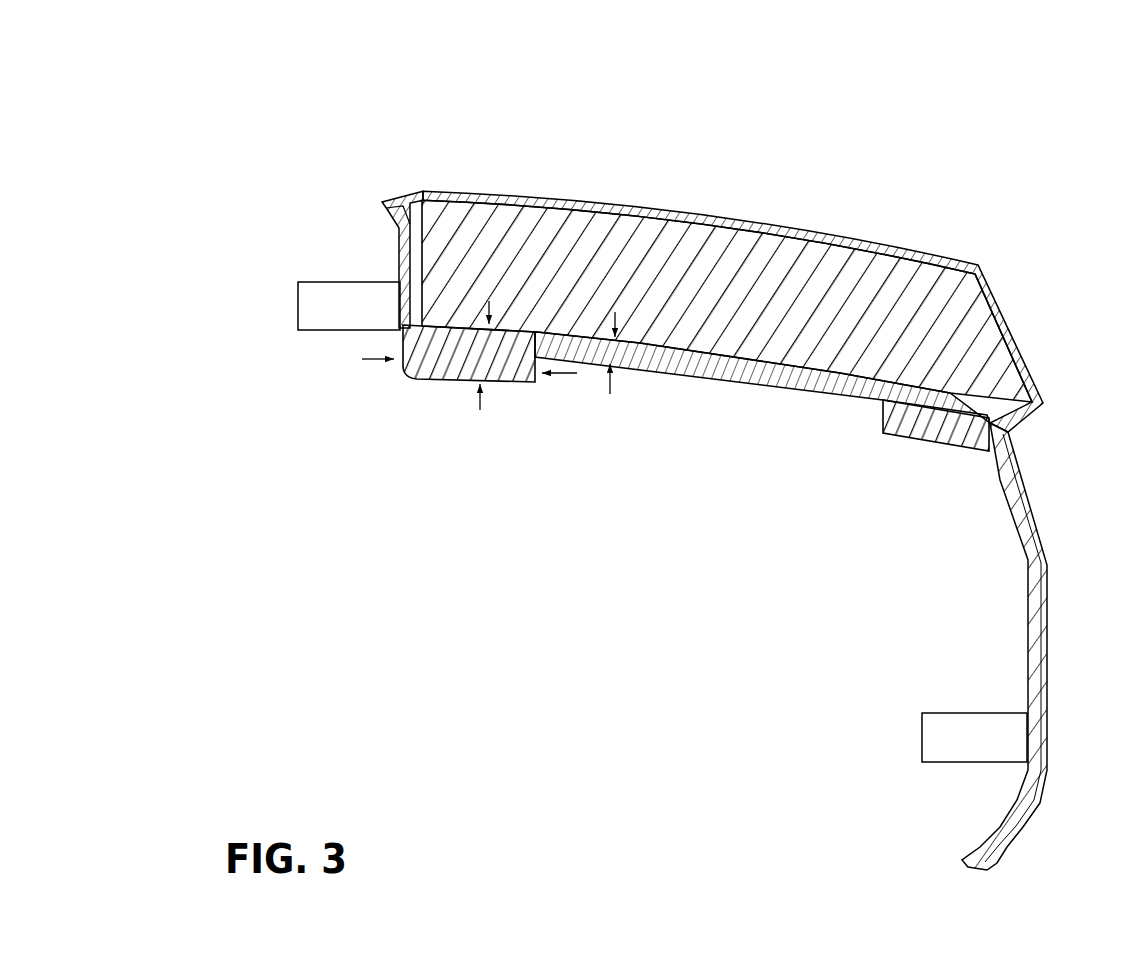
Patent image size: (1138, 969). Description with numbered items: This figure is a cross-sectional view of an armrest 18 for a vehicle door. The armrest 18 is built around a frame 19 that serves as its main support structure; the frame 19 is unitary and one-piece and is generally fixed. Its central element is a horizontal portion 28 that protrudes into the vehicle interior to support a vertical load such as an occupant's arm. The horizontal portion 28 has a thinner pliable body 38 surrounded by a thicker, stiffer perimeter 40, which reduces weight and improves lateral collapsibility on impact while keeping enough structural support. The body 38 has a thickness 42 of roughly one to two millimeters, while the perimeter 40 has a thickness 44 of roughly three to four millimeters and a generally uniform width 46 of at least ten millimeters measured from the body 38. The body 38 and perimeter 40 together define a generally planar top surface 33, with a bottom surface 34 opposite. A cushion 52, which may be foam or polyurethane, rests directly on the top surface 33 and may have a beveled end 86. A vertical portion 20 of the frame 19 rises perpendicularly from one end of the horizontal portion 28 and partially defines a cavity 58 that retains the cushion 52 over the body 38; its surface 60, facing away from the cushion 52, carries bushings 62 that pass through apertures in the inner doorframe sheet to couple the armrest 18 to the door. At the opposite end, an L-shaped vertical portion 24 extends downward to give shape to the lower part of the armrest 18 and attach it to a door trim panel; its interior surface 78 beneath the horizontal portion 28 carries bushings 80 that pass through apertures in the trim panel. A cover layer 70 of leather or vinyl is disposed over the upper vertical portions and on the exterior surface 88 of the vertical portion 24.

The armrest 18 is at (1022, 101).
The frame 19 is at (398, 240).
The vertical portion 20 is at (398, 333).
The vertical portion 24 is at (1027, 686).
The horizontal portion 28 is at (686, 370).
The top surface 33 is at (857, 330).
The bottom surface 34 is at (827, 391).
The body 38 is at (757, 381).
The perimeter 40 is at (507, 383).
The thickness 42 is at (611, 392).
The thickness 44 is at (478, 408).
The width 46 is at (362, 360).
The cushion 52 is at (722, 246).
The cavity 58 is at (407, 213).
The surface 60 is at (399, 270).
The bushings 62 is at (297, 298).
The cover layer 70 is at (963, 264).
The interior surface 78 is at (1028, 633).
The bushings 80 is at (922, 750).
The end 86 is at (1000, 298).
The exterior surface 88 is at (1046, 614).